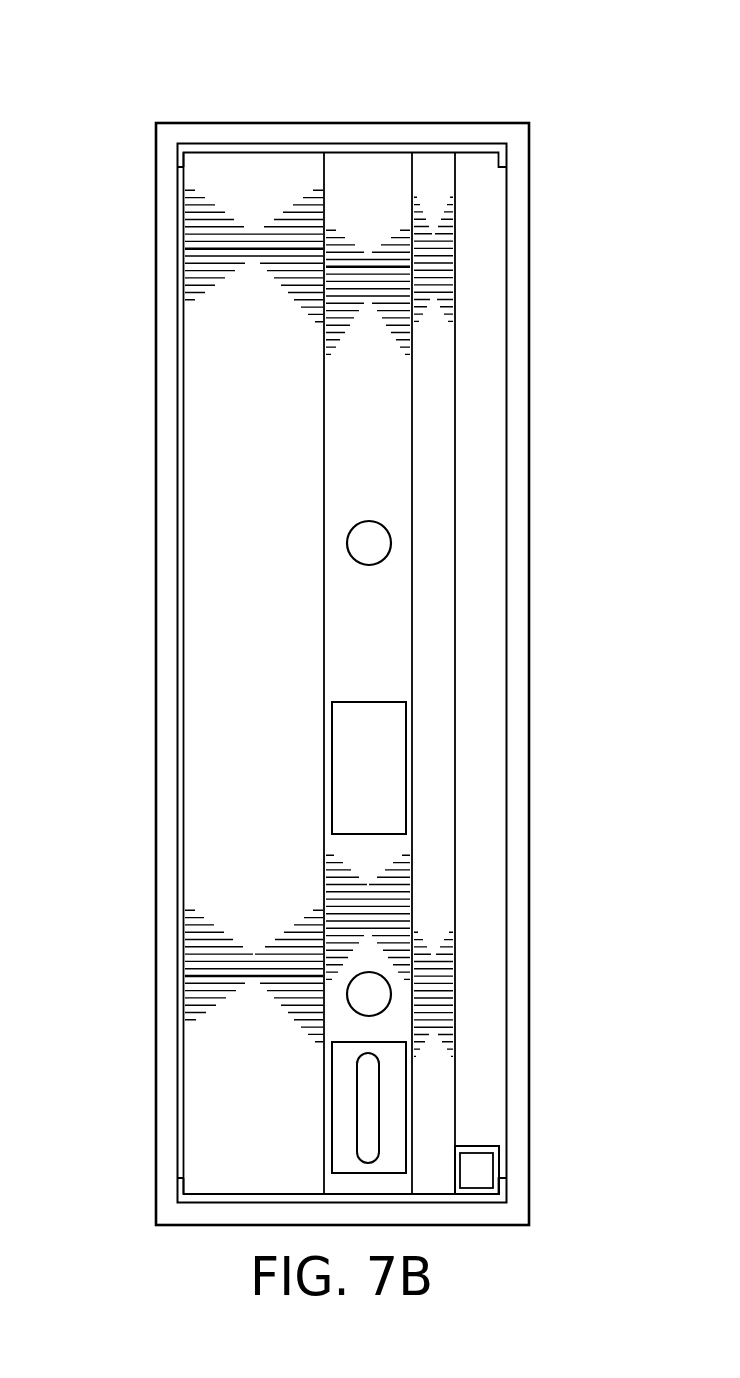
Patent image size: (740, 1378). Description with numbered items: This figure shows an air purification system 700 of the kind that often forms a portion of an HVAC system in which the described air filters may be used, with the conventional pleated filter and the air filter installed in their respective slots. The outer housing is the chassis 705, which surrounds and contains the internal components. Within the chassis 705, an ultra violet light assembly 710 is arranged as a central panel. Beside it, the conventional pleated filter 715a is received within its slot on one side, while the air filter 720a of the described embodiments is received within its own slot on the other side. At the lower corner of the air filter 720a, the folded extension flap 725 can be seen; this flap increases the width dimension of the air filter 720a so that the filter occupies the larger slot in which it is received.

The sensor assembly 700 is at (228, 83).
The chassis 705 is at (392, 122).
The ultra violet light assembly 710 is at (350, 445).
The conventional pleated filter 715a is at (222, 366).
The air filter 720a is at (440, 362).
The folded extension flap 725 is at (475, 1147).